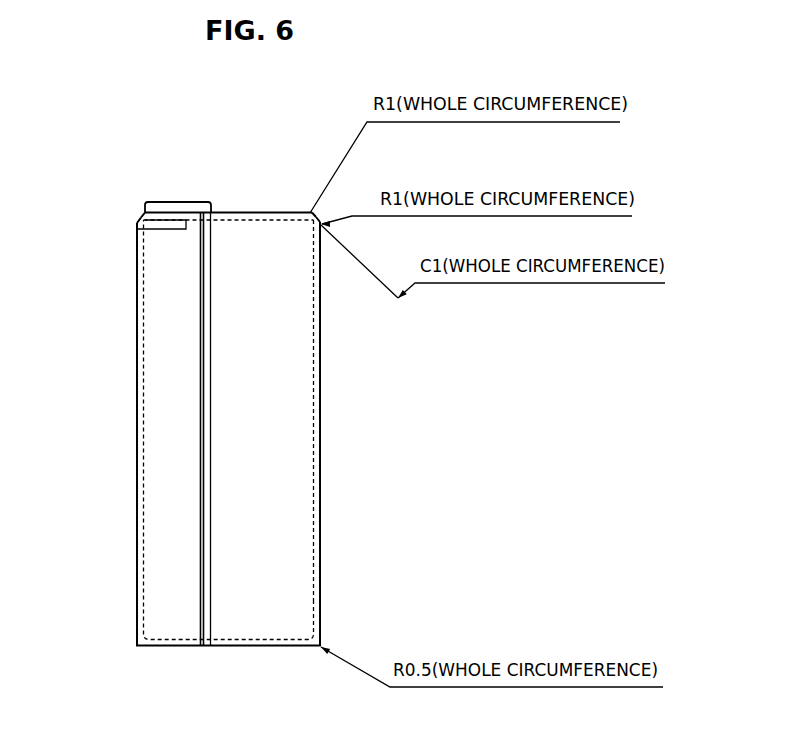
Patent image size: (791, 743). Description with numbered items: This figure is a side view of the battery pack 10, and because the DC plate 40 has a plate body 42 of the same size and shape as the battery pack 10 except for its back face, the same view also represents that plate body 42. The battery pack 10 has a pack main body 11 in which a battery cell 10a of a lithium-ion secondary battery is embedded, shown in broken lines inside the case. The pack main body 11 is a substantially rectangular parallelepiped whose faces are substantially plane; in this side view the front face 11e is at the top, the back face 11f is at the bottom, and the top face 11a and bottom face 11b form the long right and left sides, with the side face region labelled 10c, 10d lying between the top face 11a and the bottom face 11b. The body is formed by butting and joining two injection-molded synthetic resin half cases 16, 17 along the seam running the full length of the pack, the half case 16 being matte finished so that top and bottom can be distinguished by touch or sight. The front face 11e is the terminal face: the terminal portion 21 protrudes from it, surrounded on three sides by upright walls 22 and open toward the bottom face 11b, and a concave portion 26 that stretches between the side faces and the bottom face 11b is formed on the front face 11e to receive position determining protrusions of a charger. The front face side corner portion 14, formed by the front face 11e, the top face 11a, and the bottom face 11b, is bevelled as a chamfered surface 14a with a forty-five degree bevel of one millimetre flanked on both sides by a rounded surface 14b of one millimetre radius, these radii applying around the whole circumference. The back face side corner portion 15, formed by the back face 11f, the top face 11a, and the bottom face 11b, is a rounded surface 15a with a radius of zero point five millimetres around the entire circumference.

The battery pack 10 is at (88, 380).
The DC plate 40 is at (238, 425).
The battery cell 10a is at (315, 445).
The side surface 10c is at (375, 410).
The side surface 10d is at (287, 395).
The pack main body 11 is at (278, 683).
The top face 11a is at (320, 510).
The bottom face 11b is at (137, 510).
The front face 11e is at (233, 212).
The back face 11f is at (292, 647).
The front face side corner portion 14 is at (127, 219).
The chamfered surface 14a is at (140, 218).
The rounded surface 14b is at (138, 226).
The back face side corner portion 15 is at (131, 654).
The rounded surface 15a is at (137, 646).
The half case 16 is at (186, 646).
The half case 17 is at (252, 644).
The terminal portion 21 is at (171, 190).
The upright walls 22 is at (185, 207).
The concave portion 26 is at (163, 230).
The plate body 42 is at (175, 468).